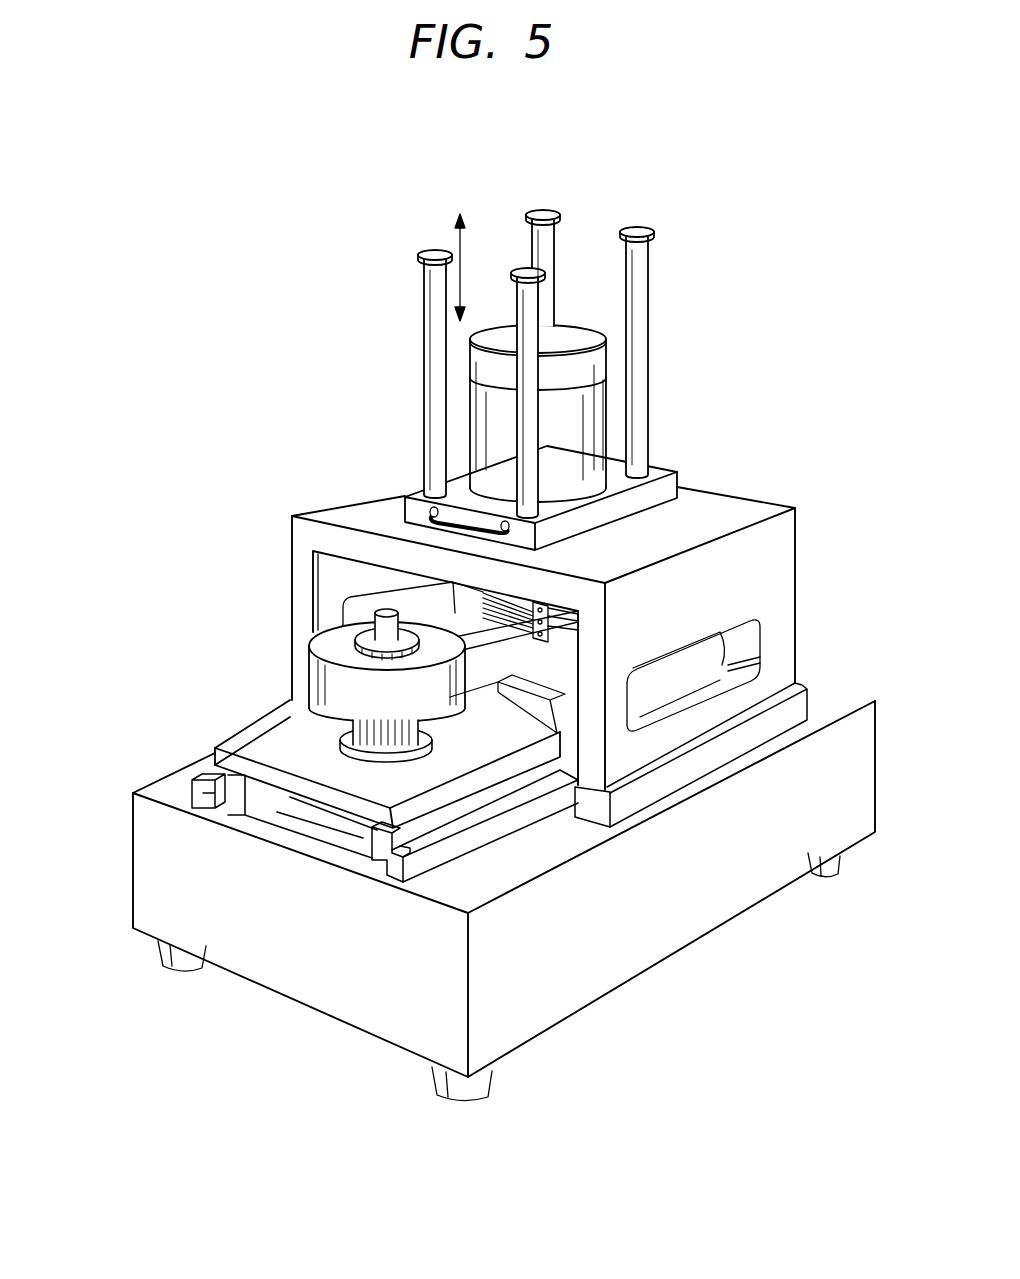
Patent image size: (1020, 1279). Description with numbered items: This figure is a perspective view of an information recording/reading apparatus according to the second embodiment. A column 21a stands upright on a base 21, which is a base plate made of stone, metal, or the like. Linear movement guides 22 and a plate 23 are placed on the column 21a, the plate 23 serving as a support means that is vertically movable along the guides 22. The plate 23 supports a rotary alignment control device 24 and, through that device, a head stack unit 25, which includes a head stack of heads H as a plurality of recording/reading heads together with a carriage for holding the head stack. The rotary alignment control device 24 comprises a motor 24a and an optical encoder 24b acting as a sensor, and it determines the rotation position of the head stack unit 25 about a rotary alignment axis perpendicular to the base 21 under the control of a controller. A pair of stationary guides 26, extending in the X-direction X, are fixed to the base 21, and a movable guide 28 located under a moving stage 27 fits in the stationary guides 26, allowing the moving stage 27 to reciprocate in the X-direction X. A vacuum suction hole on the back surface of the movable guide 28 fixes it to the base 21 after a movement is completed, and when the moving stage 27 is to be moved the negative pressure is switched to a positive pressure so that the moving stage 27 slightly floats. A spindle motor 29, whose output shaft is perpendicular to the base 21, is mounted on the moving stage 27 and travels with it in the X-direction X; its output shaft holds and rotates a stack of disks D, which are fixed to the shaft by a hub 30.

The base 21 is at (830, 805).
The column 21a is at (778, 588).
The linear movement guides 22 is at (633, 227).
The plate 23 is at (620, 510).
The rotary alignment control device 24 is at (625, 384).
The motor 24a is at (570, 420).
The optical encoder 24b is at (568, 338).
The head stack unit 25 is at (498, 623).
The stationary guides 26 is at (191, 796).
The moving stage 27 is at (237, 744).
The movable guide 28 is at (372, 842).
The spindle motor 29 is at (430, 755).
The hub 30 is at (386, 611).
The disks D is at (333, 637).
The heads H is at (528, 640).
The X-direction X is at (279, 686).